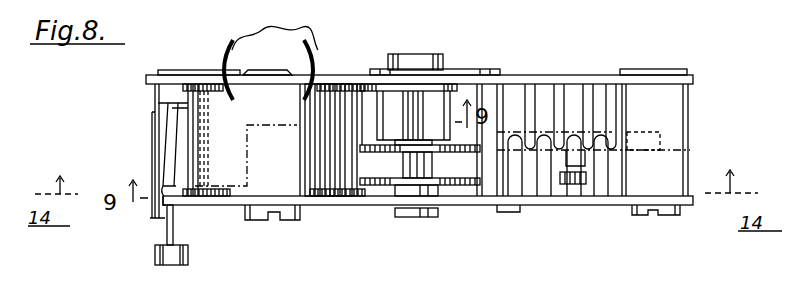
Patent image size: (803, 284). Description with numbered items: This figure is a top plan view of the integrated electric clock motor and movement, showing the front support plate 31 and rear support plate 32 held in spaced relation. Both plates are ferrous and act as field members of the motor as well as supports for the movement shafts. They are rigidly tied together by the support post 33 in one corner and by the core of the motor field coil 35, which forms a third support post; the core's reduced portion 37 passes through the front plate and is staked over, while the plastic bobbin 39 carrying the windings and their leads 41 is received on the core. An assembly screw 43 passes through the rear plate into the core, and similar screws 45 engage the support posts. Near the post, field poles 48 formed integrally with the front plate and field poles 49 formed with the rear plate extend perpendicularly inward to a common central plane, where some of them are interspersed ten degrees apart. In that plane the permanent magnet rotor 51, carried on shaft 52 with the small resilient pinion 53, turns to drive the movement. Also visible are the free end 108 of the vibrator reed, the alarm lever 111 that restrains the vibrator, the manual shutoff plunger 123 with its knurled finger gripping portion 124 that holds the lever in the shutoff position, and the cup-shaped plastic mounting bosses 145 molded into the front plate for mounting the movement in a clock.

The front support plate 31 is at (478, 75).
The rear support plate 32 is at (455, 205).
The support post 33 is at (680, 140).
The motor field coil 35 is at (221, 178).
The reduced portion 37 is at (272, 60).
The plastic bobbin 39 is at (337, 194).
The leads 41 is at (290, 30).
The assembly screw 43 is at (290, 212).
The screws 45 is at (667, 212).
The field poles 48 is at (592, 92).
The field poles 49 is at (572, 190).
The permanent magnet rotor 51 is at (605, 132).
The shaft 52 is at (570, 112).
The resilient pinion 53 is at (585, 160).
The free end 108 is at (152, 134).
The alarm lever 111 is at (183, 152).
The manual shutoff plunger 123 is at (167, 236).
The finger gripping portion 124 is at (155, 258).
The mounting bosses 145 is at (435, 100).